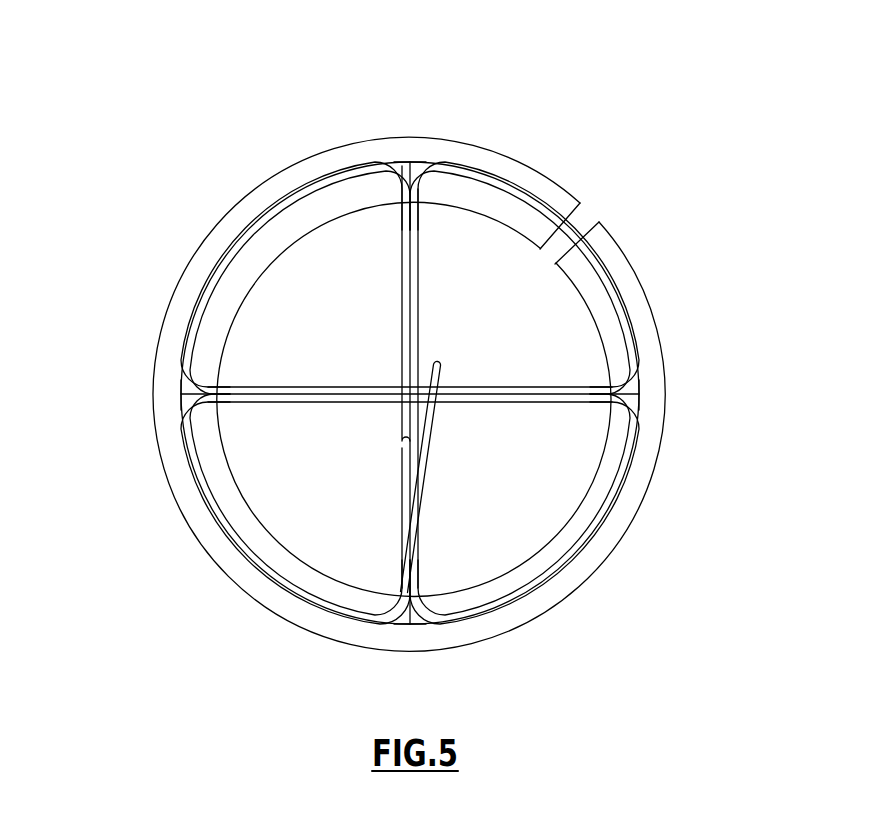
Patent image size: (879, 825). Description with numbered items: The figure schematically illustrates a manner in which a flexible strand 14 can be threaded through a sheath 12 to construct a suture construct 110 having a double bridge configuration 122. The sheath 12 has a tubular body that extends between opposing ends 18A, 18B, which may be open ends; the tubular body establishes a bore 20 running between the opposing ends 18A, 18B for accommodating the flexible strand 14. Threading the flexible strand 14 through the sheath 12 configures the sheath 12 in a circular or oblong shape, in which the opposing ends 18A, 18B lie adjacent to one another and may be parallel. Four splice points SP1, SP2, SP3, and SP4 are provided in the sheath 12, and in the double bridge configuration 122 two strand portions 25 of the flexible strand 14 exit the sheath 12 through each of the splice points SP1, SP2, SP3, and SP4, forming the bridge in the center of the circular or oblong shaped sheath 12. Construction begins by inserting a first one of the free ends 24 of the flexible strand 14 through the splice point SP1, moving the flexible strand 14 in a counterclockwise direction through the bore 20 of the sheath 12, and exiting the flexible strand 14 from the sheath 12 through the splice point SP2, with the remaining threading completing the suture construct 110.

The suture construct 110 is at (565, 107).
The sheath 12 is at (513, 627).
The flexible strand 14 is at (288, 585).
The bore 20 is at (607, 538).
The opposing end 18A is at (597, 170).
The opposing end 18B is at (599, 219).
The free ends 24 is at (440, 364).
The strand portions 25 is at (403, 314).
The double bridge configuration 122 is at (359, 417).
The splice point SP1 is at (409, 157).
The splice point SP2 is at (176, 396).
The splice point SP3 is at (410, 630).
The splice point SP4 is at (644, 396).